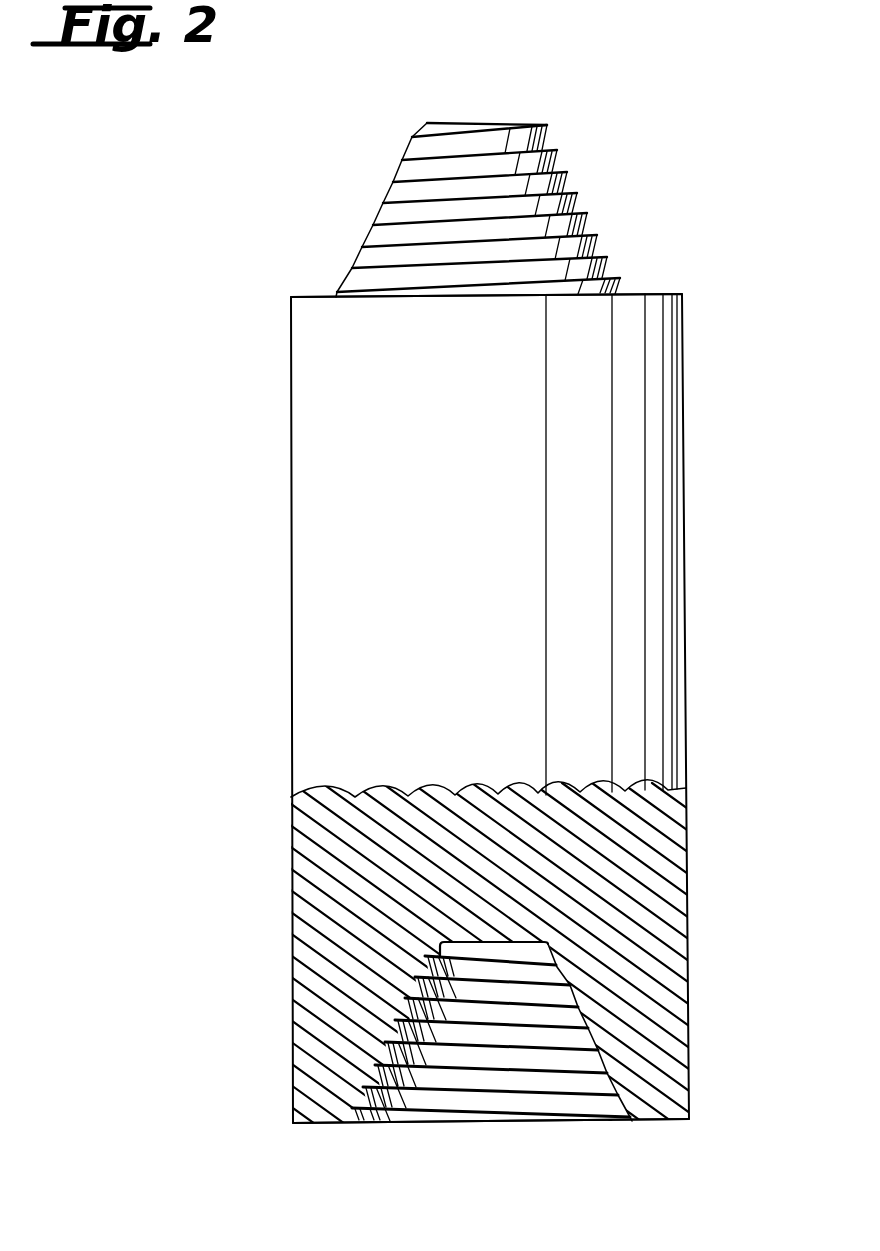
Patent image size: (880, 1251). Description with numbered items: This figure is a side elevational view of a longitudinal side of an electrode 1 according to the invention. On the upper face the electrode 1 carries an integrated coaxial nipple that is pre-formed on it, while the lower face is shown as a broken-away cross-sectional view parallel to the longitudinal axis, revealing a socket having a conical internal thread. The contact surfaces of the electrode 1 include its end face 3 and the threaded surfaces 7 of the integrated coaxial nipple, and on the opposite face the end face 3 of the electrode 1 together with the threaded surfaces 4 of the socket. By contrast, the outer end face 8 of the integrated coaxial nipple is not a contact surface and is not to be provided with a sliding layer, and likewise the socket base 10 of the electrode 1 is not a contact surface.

The electrode 1 is at (685, 562).
The end face 3 is at (635, 293).
The threaded surfaces of the socket 4 is at (608, 1073).
The threaded surfaces of the integrated coaxial nipple 7 is at (476, 168).
The outer end face of the integrated coaxial nipple 8 is at (498, 120).
The socket base 10 is at (492, 1036).